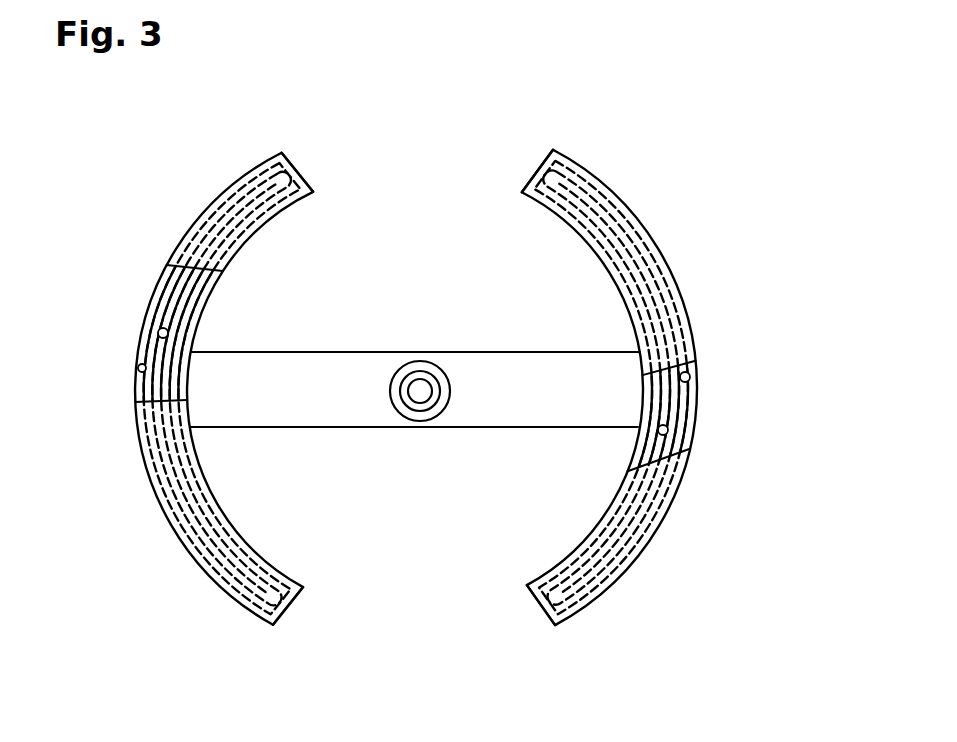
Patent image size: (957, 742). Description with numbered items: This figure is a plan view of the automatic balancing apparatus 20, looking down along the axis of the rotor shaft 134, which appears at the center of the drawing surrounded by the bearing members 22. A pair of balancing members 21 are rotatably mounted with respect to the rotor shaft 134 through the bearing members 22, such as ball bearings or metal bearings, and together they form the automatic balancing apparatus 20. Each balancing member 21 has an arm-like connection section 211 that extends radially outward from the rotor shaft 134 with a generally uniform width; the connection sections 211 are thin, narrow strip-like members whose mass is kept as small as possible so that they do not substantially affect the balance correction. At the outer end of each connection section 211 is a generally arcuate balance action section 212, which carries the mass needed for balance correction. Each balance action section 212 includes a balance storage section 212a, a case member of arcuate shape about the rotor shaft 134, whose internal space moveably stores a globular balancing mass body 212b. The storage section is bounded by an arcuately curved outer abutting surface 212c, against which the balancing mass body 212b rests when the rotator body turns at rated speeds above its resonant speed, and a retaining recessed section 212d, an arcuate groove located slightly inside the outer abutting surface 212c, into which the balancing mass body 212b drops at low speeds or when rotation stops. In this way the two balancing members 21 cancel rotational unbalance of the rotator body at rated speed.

The automatic balancing apparatus 20 is at (448, 534).
The balancing member 21 is at (607, 170).
The connection section 211 is at (290, 400).
The balance action section 212 is at (183, 223).
The balance storage section 212a is at (662, 268).
The balancing mass body 212b is at (152, 330).
The outer abutting surface 212c is at (140, 372).
The retaining recessed section 212d is at (145, 402).
The bearing member 22 is at (400, 373).
The rotor shaft 134 is at (424, 384).